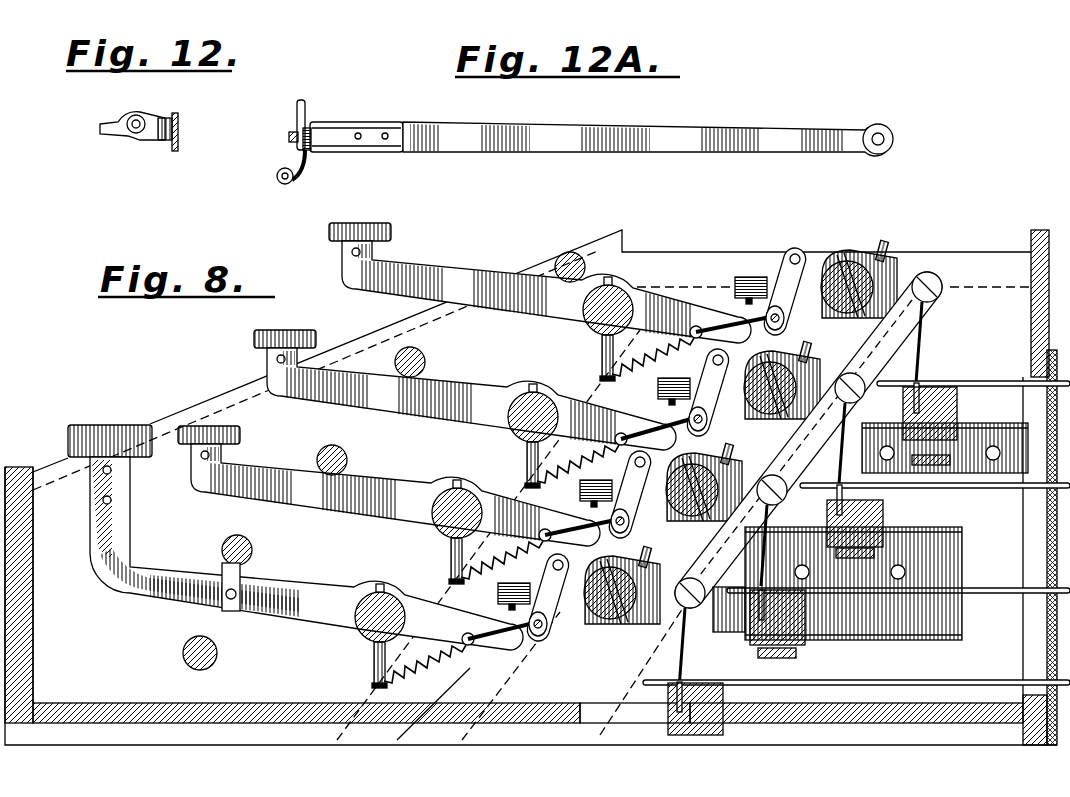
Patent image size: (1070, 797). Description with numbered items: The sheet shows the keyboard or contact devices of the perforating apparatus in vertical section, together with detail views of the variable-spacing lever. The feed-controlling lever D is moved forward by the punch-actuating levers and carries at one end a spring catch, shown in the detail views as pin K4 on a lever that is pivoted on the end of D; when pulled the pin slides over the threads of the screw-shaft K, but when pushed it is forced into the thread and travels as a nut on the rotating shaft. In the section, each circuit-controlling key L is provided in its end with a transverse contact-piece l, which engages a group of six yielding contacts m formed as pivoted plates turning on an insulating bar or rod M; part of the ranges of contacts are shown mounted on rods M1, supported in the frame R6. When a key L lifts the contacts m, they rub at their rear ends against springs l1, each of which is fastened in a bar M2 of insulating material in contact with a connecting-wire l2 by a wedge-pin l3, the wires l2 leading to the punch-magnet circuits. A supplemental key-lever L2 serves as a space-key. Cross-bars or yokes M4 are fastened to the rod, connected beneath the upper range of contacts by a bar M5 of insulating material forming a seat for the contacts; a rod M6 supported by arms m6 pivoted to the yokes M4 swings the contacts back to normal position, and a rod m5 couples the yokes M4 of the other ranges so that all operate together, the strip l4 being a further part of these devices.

In FIG. 12, the key lever K is at (124, 137).
In FIG. 12A, the key lever K is at (296, 160).
In FIG. 12, the key lever pin K4 is at (176, 152).
In FIG. 12A, the key lever pin K4 is at (283, 183).
In FIG. 12A, the feed-controlling lever D is at (530, 140).
In FIG. 8, the frame R6 is at (18, 466).
In FIG. 8, the circuit-controlling key L is at (463, 283).
In FIG. 8, the supplemental key-lever L2 is at (340, 580).
In FIG. 8, the rod M1 is at (600, 336).
In FIG. 8, the insulating bar or rod M is at (922, 275).
In FIG. 8, the bar of insulating material M2 is at (957, 410).
In FIG. 8, the cross-bar or yoke M4 is at (930, 270).
In FIG. 8, the bar of insulating material M5 is at (735, 290).
In FIG. 8, the rod M6 is at (812, 256).
In FIG. 8, the yielding contact m is at (858, 252).
In FIG. 8, the rod m5 is at (663, 477).
In FIG. 8, the arm m6 is at (778, 308).
In FIG. 8, the transverse contact-piece l is at (703, 335).
In FIG. 8, the spring l1 is at (846, 418).
In FIG. 8, the connecting-wire l2 is at (972, 381).
In FIG. 8, the wedge-pin l3 is at (895, 382).
In FIG. 8, the strip l4 is at (890, 322).